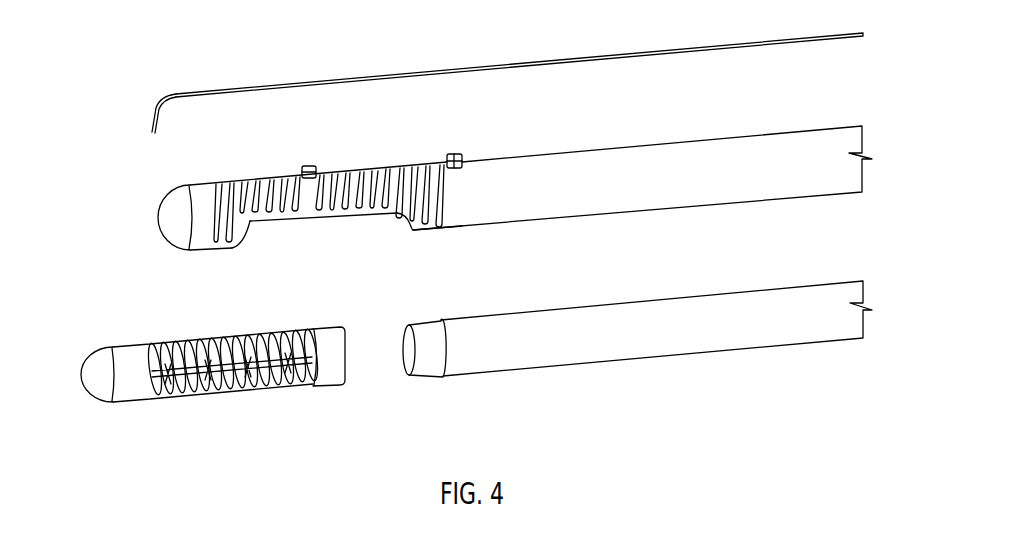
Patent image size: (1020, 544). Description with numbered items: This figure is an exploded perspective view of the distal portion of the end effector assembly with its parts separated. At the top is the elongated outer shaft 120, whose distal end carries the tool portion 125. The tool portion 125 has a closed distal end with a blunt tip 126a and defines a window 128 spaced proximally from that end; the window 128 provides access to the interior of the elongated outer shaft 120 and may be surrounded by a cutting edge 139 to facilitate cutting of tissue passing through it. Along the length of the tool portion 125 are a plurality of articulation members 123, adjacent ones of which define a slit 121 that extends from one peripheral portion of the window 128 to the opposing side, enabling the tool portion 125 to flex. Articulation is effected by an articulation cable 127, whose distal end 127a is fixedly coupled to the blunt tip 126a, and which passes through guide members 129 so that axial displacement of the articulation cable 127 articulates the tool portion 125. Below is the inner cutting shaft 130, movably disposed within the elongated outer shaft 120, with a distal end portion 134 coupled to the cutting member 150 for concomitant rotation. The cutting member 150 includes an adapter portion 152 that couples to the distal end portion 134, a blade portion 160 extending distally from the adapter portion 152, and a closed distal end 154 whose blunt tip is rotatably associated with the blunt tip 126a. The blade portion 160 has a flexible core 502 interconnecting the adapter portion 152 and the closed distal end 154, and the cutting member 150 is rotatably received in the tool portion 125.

The elongated outer shaft 120 is at (777, 133).
The slit 121 is at (335, 208).
The articulation members 123 is at (248, 180).
The tool portion 125 is at (423, 226).
The blunt tip 126a is at (150, 192).
The articulation cable 127 is at (424, 70).
The distal end of articulation cable 127a is at (172, 90).
The window 128 is at (248, 232).
The guide members 129 is at (304, 165).
The inner cutting shaft 130 is at (565, 382).
The distal end portion of inner cutting shaft 134 is at (425, 361).
The cutting edge 139 is at (363, 211).
The cutting member 150 is at (247, 400).
The adapter portion 152 is at (332, 378).
The closed distal end 154 is at (109, 408).
The blade portion 160 is at (210, 343).
The flexible core 502 is at (173, 396).